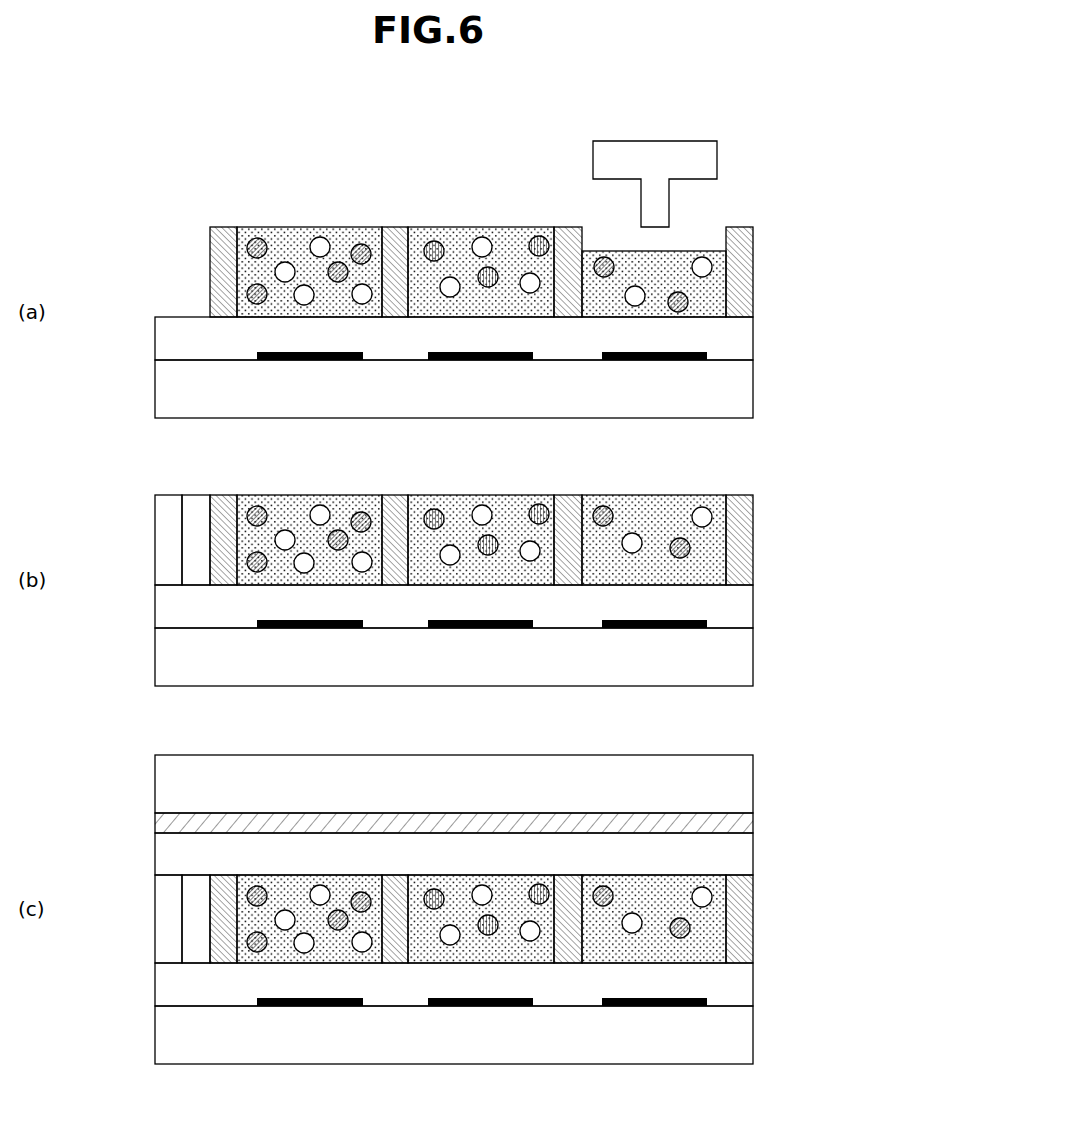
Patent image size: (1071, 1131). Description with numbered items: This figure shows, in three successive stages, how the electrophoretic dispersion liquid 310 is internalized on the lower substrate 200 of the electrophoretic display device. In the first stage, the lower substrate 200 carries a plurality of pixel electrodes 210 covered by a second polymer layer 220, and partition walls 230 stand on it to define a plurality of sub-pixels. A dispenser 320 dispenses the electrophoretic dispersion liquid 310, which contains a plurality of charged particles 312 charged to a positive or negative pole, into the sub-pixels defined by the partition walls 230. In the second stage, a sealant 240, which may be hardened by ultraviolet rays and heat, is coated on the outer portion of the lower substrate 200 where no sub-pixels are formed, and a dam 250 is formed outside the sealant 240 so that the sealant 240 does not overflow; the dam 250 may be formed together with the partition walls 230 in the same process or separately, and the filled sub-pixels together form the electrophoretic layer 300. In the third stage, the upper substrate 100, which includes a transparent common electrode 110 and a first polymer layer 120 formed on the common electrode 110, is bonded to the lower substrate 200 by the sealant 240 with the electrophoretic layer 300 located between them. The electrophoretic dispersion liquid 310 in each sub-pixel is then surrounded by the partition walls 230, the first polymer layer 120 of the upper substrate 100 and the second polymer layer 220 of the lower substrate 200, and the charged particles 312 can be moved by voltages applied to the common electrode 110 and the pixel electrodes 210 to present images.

The upper substrate 100 is at (750, 785).
The common electrode 110 is at (750, 821).
The polymer layer 120 is at (750, 858).
The lower substrate 200 is at (750, 388).
The pixel electrodes 210 is at (707, 356).
The second polymer layer 220 is at (750, 330).
The partition walls 230 is at (750, 269).
The sealant 240 is at (192, 519).
The dam 250 is at (162, 501).
The electrophoretic layer 300 is at (760, 495).
The electrophoretic dispersion liquid 310 is at (510, 247).
The charged particles 312 is at (434, 241).
The dispenser 320 is at (717, 155).